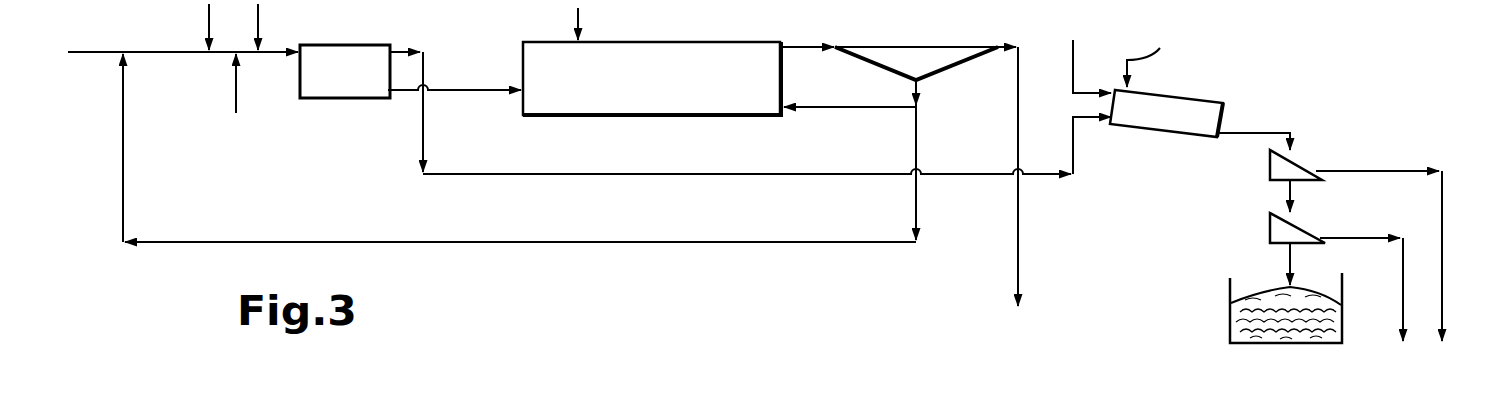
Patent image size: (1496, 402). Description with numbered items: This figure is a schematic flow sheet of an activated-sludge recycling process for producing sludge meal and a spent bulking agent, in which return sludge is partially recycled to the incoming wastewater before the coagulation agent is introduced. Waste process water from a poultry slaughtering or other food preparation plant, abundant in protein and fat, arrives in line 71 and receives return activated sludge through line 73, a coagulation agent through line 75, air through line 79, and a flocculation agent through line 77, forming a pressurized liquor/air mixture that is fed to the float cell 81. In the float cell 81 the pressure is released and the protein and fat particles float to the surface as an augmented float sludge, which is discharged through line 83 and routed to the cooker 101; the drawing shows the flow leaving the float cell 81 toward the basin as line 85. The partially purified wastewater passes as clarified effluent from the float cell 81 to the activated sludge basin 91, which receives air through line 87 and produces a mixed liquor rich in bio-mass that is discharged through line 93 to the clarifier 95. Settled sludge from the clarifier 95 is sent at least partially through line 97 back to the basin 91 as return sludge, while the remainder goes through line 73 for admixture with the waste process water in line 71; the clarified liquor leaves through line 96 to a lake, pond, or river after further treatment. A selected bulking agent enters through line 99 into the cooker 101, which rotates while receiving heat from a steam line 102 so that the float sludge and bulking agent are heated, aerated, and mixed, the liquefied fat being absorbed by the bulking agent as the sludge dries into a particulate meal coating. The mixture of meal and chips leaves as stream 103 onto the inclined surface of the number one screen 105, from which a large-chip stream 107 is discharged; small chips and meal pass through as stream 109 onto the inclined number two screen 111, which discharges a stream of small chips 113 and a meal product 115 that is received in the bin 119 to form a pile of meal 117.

The line (waste process water) 71 is at (107, 51).
The line (return activated sludge) 73 is at (125, 99).
The line (coagulation agent) 75 is at (205, 16).
The line (flocculation agent) 77 is at (259, 26).
The line (air) 79 is at (235, 90).
The float cell 81 is at (332, 44).
The line (augmented float sludge) 83 is at (426, 66).
The mixed feed stream to aeration basin 85 is at (478, 88).
The line (air to basin) 87 is at (575, 22).
The activated sludge basin 91 is at (700, 41).
The line (mixed liquor) 93 is at (805, 45).
The clarifier 95 is at (922, 45).
The line (clarified liquor) 96 is at (1016, 270).
The line (return sludge) 97 is at (912, 92).
The line (bulking agent) 99 is at (1075, 52).
The cooker 101 is at (1188, 97).
The steam line 102 is at (1149, 53).
The stream (meal and chips) 103 is at (1275, 122).
The No. 1 screen 105 is at (1303, 165).
The large-chip stream 107 is at (1445, 189).
The stream (small chips and meal) 109 is at (1291, 195).
The No. 2 screen 111 is at (1300, 228).
The stream of small chips 113 is at (1371, 233).
The meal product 115 is at (1291, 262).
The pile of meal 117 is at (1269, 290).
The bin 119 is at (1232, 308).